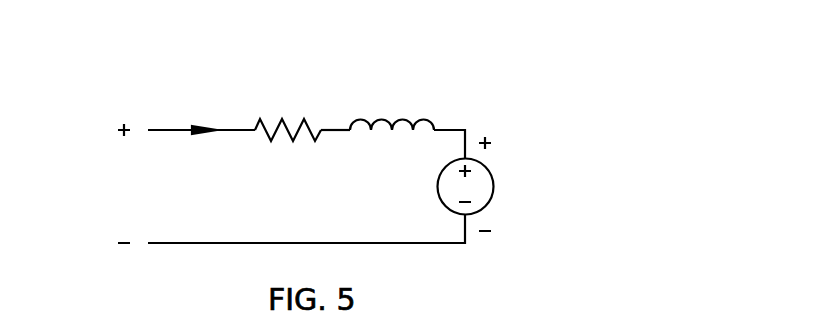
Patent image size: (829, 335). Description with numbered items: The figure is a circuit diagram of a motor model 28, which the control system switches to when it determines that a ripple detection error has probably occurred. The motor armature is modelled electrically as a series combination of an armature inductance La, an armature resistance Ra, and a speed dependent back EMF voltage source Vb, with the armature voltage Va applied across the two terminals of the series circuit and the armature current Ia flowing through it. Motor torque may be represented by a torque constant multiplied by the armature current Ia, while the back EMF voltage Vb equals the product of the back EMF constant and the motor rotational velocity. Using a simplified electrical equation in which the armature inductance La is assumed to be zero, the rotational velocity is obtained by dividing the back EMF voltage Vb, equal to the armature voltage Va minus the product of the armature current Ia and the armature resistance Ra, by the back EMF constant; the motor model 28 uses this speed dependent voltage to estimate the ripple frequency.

The motor model 28 is at (369, 134).
The armature current Ia is at (197, 111).
The armature resistance Ra is at (288, 114).
The armature inductance La is at (392, 109).
The armature voltage Va is at (125, 183).
The back EMF voltage Vb is at (510, 184).